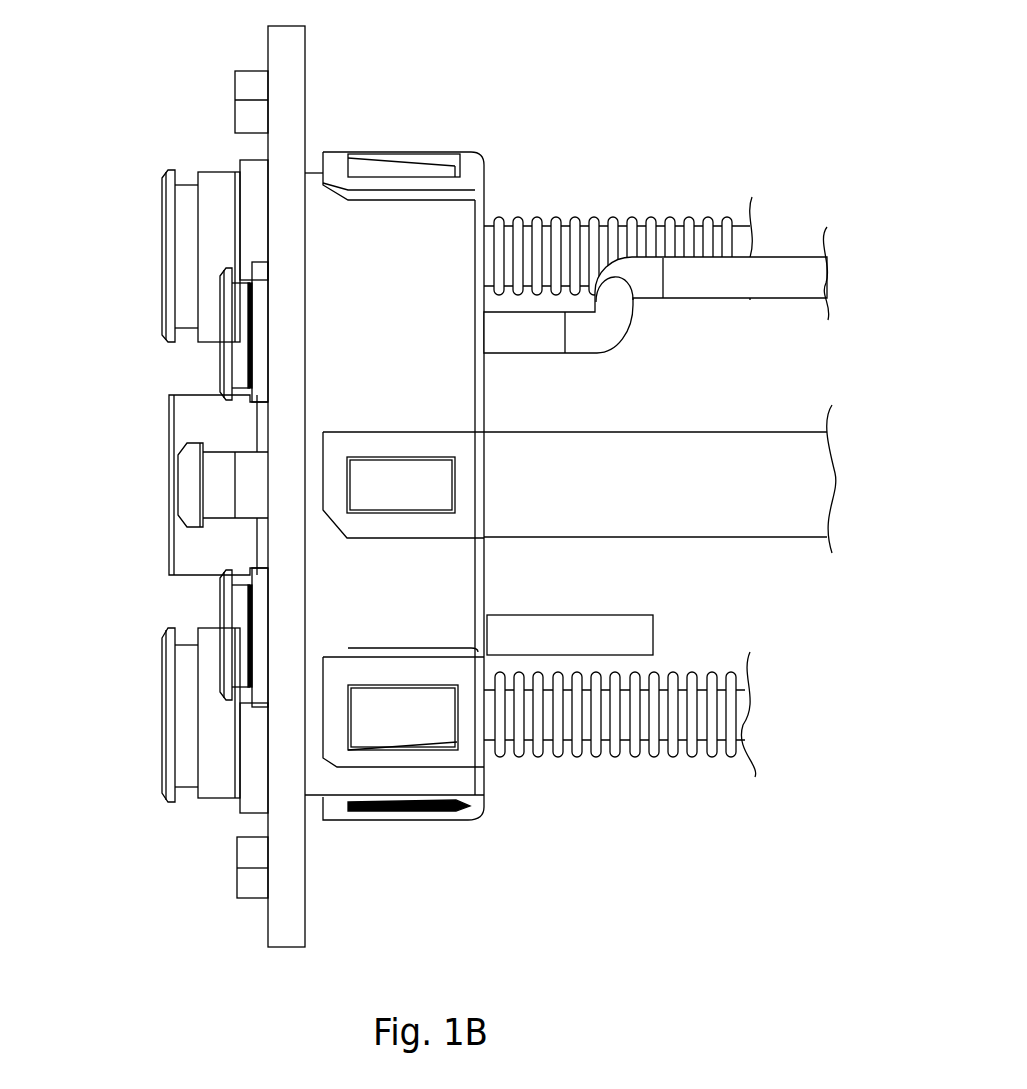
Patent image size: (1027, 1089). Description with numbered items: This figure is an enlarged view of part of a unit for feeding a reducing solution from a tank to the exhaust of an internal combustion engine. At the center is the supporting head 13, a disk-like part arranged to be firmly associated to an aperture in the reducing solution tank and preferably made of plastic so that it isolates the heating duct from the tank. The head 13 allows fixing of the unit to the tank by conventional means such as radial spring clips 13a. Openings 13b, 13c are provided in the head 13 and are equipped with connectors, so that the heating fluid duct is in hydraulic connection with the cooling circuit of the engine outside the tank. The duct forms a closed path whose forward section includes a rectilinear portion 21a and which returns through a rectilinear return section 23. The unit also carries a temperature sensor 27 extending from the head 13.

The supporting head 13 is at (103, 602).
The radial spring clips 13a is at (406, 136).
The opening 13b is at (160, 242).
The opening 13c is at (160, 727).
The rectilinear portion 21a is at (633, 758).
The rectilinear return section 23 is at (633, 216).
The temperature sensor 27 is at (788, 246).